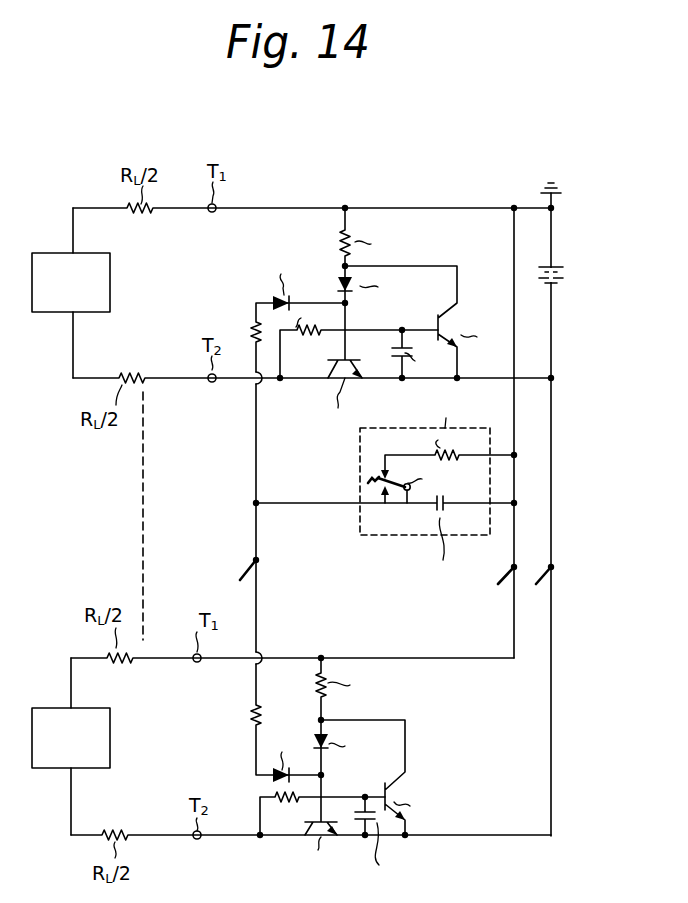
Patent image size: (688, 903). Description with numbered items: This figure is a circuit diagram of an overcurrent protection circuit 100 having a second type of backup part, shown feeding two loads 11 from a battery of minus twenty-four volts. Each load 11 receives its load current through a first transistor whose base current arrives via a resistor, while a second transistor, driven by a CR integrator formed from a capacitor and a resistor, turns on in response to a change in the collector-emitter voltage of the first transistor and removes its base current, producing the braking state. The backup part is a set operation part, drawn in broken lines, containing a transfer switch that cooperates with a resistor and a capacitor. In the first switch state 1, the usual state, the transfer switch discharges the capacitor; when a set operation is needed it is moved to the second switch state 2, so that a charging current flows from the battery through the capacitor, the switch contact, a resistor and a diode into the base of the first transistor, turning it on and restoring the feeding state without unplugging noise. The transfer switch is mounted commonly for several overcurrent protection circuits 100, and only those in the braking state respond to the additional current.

The load 11 is at (52, 250).
The overcurrent protection circuit 100 is at (437, 217).
The first switch state 1 is at (370, 468).
The second switch state 2 is at (385, 502).